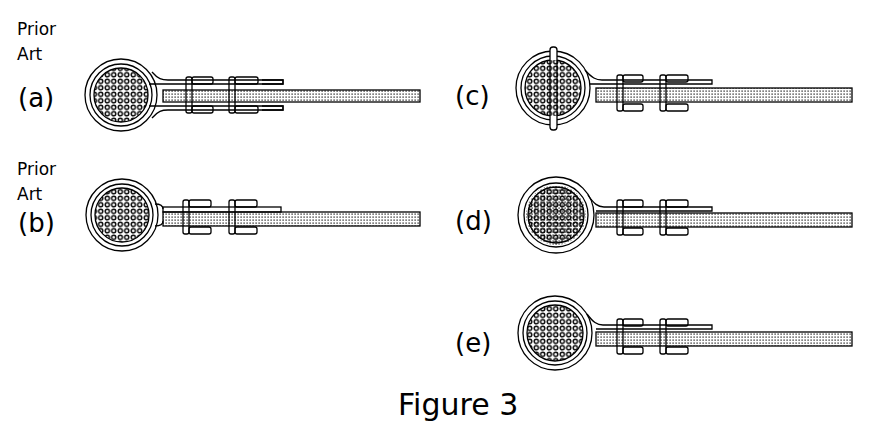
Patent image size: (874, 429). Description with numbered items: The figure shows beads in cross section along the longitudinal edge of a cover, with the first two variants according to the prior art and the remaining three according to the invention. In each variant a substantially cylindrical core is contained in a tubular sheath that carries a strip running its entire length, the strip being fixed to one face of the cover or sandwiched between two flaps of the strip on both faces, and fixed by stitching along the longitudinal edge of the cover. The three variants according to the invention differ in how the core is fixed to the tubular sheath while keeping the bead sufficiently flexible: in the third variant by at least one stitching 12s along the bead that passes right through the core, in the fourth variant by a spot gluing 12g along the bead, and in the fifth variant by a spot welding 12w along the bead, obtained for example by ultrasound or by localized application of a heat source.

The stitching 12s is at (527, 110).
The spot gluing 12g is at (528, 236).
The spot welding 12w is at (521, 317).